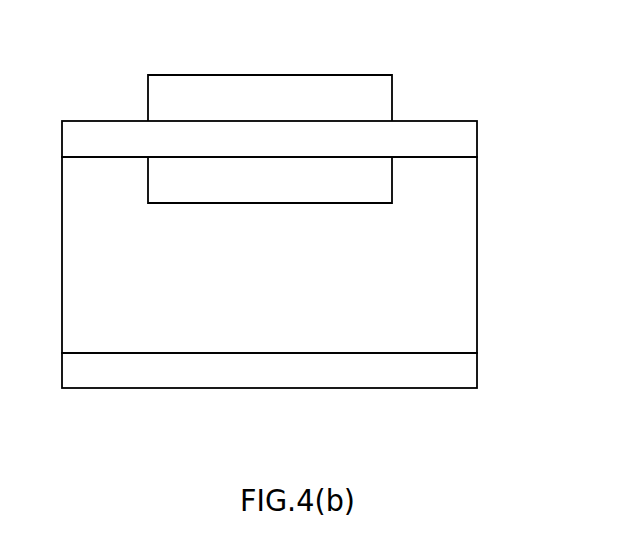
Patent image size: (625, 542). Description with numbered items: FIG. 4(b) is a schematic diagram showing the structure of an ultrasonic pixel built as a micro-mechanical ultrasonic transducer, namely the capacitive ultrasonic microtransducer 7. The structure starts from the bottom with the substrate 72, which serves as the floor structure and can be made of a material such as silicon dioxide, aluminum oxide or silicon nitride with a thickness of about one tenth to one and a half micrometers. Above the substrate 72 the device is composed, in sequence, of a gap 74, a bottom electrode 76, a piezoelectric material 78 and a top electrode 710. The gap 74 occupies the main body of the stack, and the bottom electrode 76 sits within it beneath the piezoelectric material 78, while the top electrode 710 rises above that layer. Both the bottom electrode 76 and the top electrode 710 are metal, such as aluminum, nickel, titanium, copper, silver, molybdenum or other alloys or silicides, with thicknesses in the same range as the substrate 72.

The capacitive ultrasonic microtransducer 7 is at (46, 52).
The substrate 72 is at (477, 372).
The gap 74 is at (477, 285).
The bottom electrode 76 is at (258, 204).
The piezoelectric material 78 is at (477, 137).
The top electrode 710 is at (268, 75).